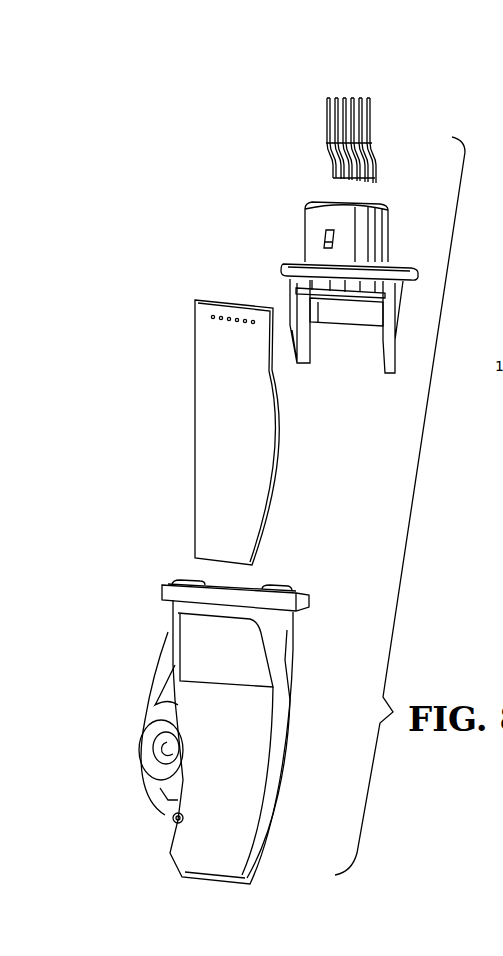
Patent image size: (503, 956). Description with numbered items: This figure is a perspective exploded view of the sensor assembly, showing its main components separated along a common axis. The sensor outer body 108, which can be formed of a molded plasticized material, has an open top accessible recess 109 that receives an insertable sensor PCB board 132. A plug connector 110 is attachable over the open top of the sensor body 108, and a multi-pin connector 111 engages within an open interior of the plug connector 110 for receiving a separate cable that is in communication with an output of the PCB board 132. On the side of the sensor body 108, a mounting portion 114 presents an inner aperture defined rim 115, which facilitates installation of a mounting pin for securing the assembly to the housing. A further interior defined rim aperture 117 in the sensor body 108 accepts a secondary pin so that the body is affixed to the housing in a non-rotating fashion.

The sensor outer body 108 is at (262, 740).
The open top accessible recess 109 is at (257, 585).
The plug connector 110 is at (305, 232).
The multi-pin connector 111 is at (326, 128).
The mounting portion 114 is at (158, 720).
The inner aperture defined rim 115 is at (167, 757).
The interior defined rim aperture 117 is at (178, 822).
The sensor PCB board 132 is at (205, 437).